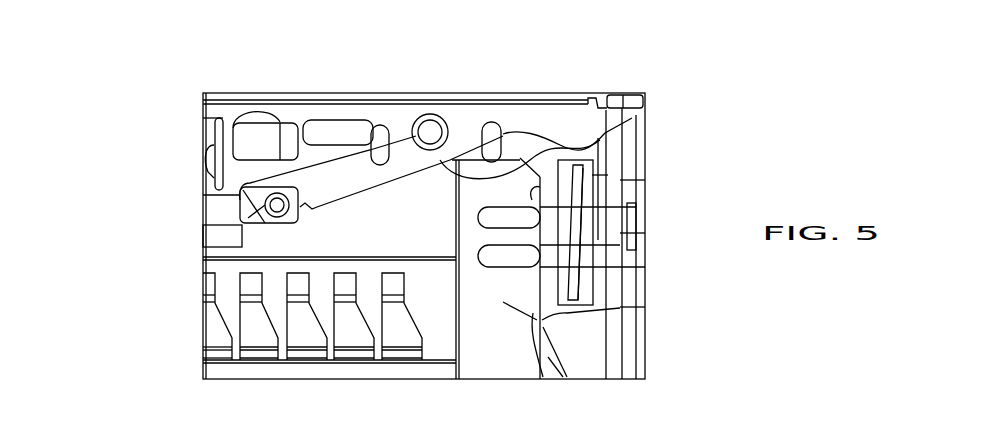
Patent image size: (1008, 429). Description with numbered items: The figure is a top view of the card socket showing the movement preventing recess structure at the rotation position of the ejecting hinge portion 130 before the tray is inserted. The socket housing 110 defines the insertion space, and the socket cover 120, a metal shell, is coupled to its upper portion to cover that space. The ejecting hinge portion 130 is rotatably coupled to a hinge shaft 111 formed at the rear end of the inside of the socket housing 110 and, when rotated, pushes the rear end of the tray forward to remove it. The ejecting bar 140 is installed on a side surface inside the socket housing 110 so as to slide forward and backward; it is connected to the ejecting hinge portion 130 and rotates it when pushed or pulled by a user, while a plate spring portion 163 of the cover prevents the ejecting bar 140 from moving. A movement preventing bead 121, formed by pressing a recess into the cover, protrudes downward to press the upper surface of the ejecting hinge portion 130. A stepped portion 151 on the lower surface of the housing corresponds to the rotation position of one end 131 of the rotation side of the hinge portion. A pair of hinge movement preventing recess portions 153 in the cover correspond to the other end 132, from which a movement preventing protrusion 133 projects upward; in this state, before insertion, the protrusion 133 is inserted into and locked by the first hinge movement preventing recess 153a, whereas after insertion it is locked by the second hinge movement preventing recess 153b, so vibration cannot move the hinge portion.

The socket housing 110 is at (647, 307).
The hinge shaft 111 is at (640, 150).
The socket cover 120 is at (202, 267).
The movement preventing bead 121 is at (487, 120).
The ejecting hinge portion 130 is at (530, 112).
The one end of rotation side of ejecting hinge portion 131 is at (633, 113).
The other end of rotation side of ejecting hinge portion 132 is at (202, 205).
The movement preventing protrusion 133 is at (202, 227).
The ejecting bar 140 is at (645, 267).
The stepped portion 151 is at (645, 180).
The hinge movement preventing recess portion 153 is at (122, 147).
The first hinge movement preventing recess 153a is at (200, 197).
The second hinge movement preventing recess 153b is at (202, 140).
The plate spring portion 163 is at (640, 233).